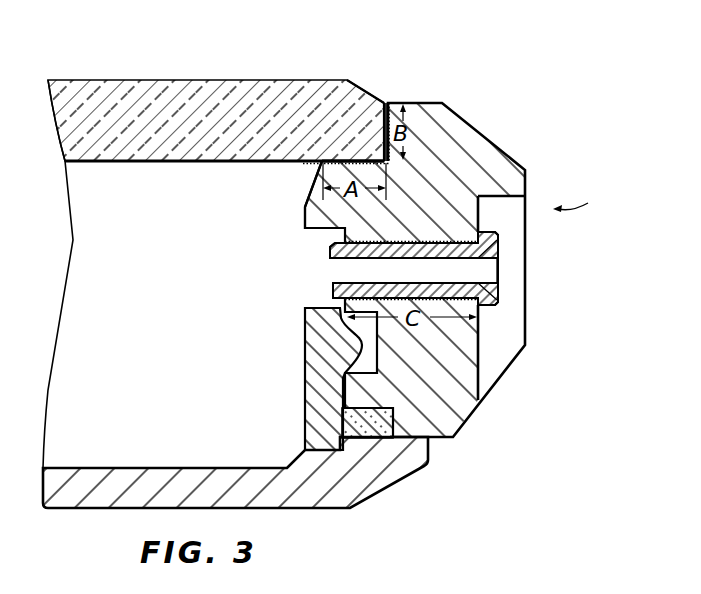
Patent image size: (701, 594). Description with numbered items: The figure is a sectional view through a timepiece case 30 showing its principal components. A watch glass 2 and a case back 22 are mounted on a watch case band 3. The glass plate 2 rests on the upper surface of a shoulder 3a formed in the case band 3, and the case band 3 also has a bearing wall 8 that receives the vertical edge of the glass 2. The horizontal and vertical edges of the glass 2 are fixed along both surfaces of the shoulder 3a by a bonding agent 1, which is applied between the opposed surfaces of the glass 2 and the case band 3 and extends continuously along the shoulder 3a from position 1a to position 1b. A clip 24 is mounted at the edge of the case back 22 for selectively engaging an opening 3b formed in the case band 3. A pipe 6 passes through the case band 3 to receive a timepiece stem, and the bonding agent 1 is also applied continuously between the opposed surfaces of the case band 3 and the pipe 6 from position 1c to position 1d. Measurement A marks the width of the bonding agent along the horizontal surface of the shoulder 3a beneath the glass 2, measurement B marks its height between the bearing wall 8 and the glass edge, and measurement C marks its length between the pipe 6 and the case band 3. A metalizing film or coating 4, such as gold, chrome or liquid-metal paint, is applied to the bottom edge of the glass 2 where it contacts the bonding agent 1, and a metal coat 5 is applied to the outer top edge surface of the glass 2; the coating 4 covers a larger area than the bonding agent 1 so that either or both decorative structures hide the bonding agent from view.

The bonding agent 1 is at (416, 165).
The position 1a is at (388, 104).
The position 1b is at (318, 166).
The position 1c is at (480, 231).
The position 1d is at (333, 245).
The watch glass 2 is at (132, 97).
The case band 3 is at (463, 143).
The shoulder 3a is at (318, 172).
The opening 3b is at (320, 342).
The metalizing film or coating 4 is at (322, 157).
The metal coat 5 is at (362, 88).
The pipe 6 is at (497, 298).
The bearing wall 8 is at (385, 100).
The case back 22 is at (392, 468).
The clip 24 is at (320, 426).
The timepiece case 30 is at (578, 193).